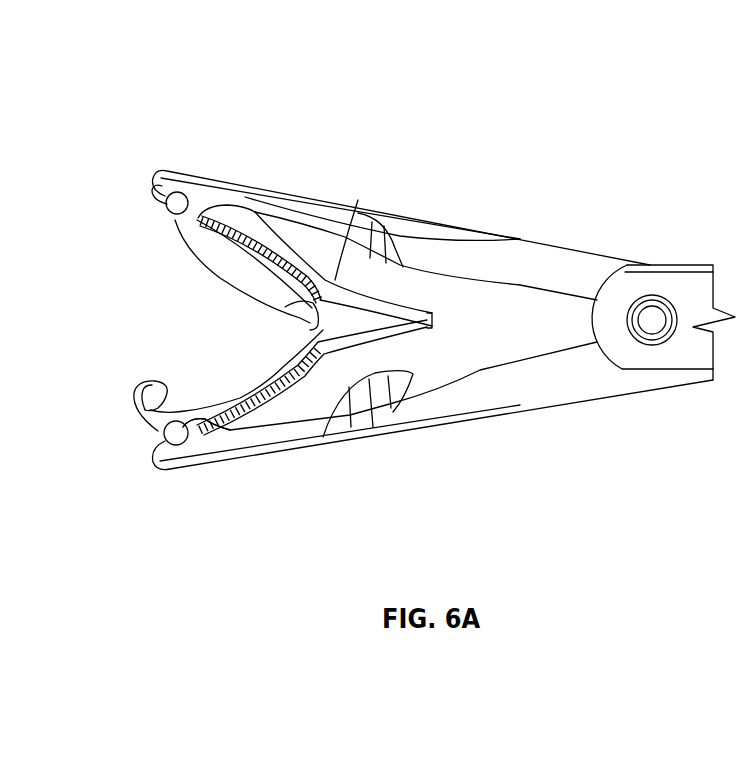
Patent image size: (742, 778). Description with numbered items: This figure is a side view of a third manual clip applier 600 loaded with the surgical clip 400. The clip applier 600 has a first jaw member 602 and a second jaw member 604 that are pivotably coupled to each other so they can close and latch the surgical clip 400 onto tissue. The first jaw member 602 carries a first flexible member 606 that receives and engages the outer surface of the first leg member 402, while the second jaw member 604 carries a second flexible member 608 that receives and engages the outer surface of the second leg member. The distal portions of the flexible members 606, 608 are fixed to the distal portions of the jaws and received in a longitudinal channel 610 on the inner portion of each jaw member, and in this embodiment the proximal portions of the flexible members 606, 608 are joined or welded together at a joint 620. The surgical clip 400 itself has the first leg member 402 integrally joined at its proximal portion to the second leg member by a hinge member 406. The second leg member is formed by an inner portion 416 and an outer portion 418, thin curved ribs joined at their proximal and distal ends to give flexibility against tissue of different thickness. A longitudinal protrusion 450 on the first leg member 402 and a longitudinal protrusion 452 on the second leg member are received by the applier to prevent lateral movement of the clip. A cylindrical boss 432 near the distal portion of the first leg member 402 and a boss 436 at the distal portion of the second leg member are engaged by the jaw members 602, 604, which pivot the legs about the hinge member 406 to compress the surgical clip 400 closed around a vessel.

The manual clip applier 600 is at (444, 307).
The second jaw member 604 is at (402, 233).
The first jaw member 602 is at (433, 411).
The second flexible member 608 is at (370, 221).
The first flexible member 606 is at (353, 424).
The longitudinal channel 610 is at (391, 320).
The joint 620 is at (293, 303).
The surgical clip 400 is at (290, 314).
The boss 436 is at (131, 188).
The inner portion 416 is at (215, 271).
The outer portion 418 is at (315, 233).
The longitudinal protrusion 452 is at (312, 278).
The hinge member 406 is at (273, 329).
The first leg member 402 is at (236, 371).
The longitudinal protrusion 450 is at (236, 458).
The boss 432 is at (179, 443).